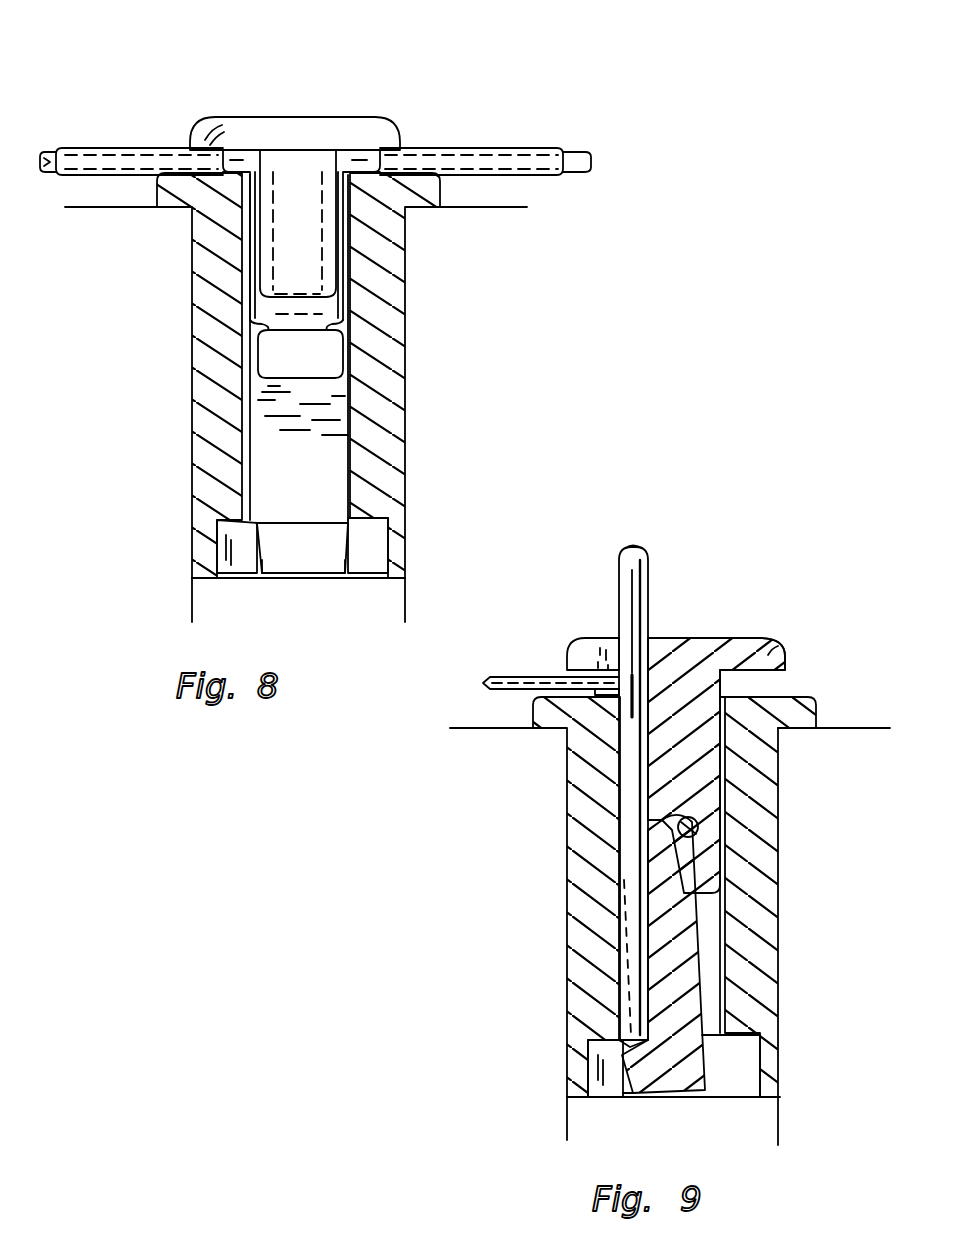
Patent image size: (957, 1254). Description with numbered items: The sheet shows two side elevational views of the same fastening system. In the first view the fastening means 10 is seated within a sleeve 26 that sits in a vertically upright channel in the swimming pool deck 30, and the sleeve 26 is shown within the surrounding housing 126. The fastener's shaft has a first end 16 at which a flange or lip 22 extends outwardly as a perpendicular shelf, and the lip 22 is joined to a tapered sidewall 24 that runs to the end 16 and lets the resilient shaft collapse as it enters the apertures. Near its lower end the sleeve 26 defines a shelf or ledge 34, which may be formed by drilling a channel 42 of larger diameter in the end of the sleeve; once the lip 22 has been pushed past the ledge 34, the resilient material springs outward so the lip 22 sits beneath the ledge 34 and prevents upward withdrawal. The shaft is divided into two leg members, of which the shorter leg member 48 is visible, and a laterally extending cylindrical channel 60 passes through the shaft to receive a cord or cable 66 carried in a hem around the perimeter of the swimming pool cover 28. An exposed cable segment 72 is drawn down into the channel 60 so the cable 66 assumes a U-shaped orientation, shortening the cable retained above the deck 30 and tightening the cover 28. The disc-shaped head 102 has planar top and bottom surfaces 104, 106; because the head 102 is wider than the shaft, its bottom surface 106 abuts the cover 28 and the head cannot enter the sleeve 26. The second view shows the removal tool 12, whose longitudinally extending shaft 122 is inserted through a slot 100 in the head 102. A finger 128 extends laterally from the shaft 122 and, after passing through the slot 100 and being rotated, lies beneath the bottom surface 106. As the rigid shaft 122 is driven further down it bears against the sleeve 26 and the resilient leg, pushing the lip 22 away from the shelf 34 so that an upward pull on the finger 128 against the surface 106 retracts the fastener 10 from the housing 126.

In FIG. 8, the fastening means 10 is at (314, 480).
In FIG. 9, the fastening means 10 is at (680, 958).
In FIG. 9, the removal tool 12 is at (619, 568).
In FIG. 8, the first end 16 is at (312, 580).
In FIG. 9, the first end 16 is at (690, 1097).
In FIG. 8, the flange 22 is at (302, 548).
In FIG. 9, the flange 22 is at (625, 1097).
In FIG. 8, the tapered sidewall 24 is at (255, 565).
In FIG. 9, the sleeve 26 is at (805, 697).
In FIG. 8, the swimming pool cover 28 is at (118, 148).
In FIG. 9, the swimming pool cover 28 is at (530, 677).
In FIG. 8, the swimming pool deck 30 is at (125, 208).
In FIG. 9, the swimming pool deck 30 is at (488, 730).
In FIG. 9, the shelf 34 is at (590, 1045).
In FIG. 8, the channel 42 is at (217, 560).
In FIG. 8, the leg member 48 is at (345, 352).
In FIG. 8, the cylindrical channel 60 is at (355, 303).
In FIG. 8, the cable 66 is at (55, 148).
In FIG. 8, the cable segment 72 is at (340, 230).
In FIG. 9, the cable segment 72 is at (700, 830).
In FIG. 9, the slot 100 is at (605, 638).
In FIG. 8, the head 102 is at (385, 117).
In FIG. 9, the head 102 is at (775, 650).
In FIG. 8, the top surface 104 is at (290, 117).
In FIG. 8, the bottom surface 106 is at (218, 121).
In FIG. 9, the shaft 122 is at (649, 587).
In FIG. 8, the housing 126 is at (405, 403).
In FIG. 9, the finger 128 is at (684, 640).